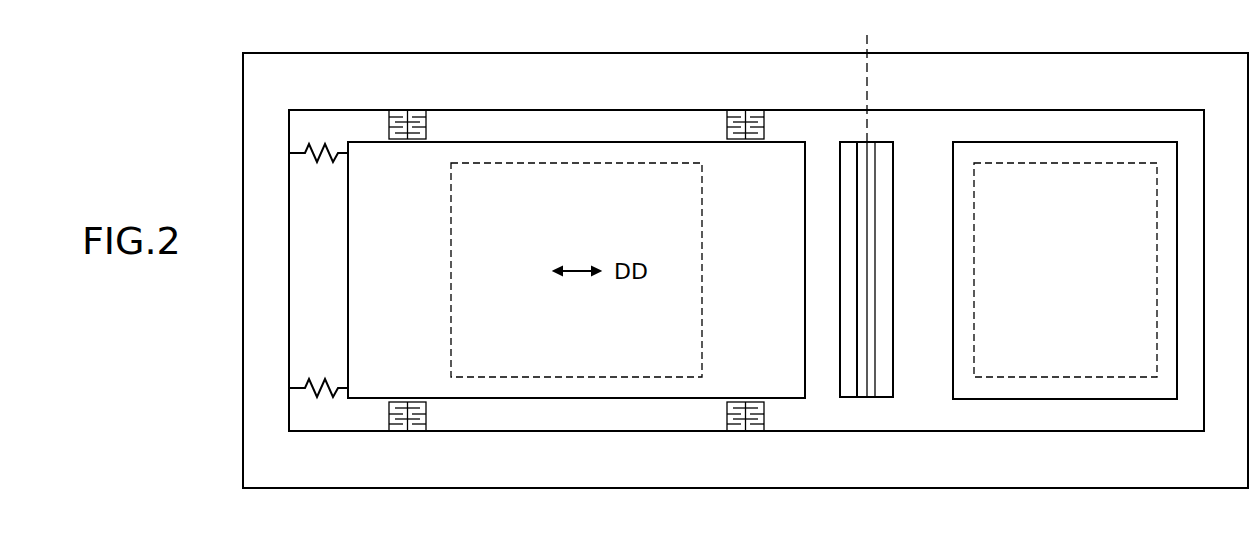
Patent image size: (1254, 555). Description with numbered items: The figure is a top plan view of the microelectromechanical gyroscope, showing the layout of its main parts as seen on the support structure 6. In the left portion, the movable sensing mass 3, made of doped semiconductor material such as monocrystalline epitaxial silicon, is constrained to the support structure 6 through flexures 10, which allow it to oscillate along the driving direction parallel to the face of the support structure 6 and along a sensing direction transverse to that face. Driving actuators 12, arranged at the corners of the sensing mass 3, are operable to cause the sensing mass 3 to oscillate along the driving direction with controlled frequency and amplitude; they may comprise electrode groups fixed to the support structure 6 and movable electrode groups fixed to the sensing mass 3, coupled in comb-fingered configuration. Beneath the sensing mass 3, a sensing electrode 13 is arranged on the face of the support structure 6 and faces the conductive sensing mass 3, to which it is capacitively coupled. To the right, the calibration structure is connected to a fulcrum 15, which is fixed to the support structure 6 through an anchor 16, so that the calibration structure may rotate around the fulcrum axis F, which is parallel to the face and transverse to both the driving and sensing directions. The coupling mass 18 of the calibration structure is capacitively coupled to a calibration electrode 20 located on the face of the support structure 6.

The sensing mass 3 is at (358, 316).
The support structure 6 is at (243, 197).
The flexures 10 is at (312, 150).
The driving actuators 12 is at (407, 112).
The sensing electrode 13 is at (600, 202).
The fulcrum 15 is at (865, 397).
The anchor 16 is at (852, 147).
The coupling mass 18 is at (1100, 150).
The calibration electrode 20 is at (1047, 200).
The fulcrum axis F is at (870, 42).